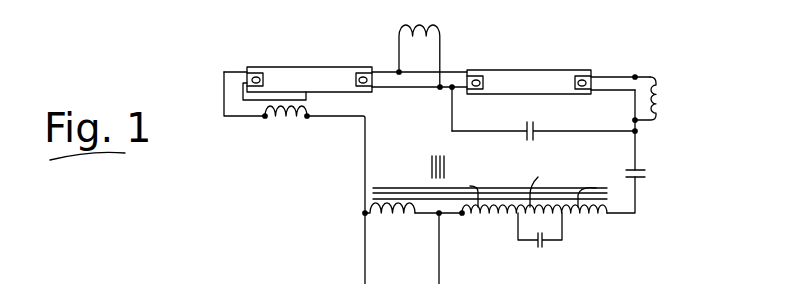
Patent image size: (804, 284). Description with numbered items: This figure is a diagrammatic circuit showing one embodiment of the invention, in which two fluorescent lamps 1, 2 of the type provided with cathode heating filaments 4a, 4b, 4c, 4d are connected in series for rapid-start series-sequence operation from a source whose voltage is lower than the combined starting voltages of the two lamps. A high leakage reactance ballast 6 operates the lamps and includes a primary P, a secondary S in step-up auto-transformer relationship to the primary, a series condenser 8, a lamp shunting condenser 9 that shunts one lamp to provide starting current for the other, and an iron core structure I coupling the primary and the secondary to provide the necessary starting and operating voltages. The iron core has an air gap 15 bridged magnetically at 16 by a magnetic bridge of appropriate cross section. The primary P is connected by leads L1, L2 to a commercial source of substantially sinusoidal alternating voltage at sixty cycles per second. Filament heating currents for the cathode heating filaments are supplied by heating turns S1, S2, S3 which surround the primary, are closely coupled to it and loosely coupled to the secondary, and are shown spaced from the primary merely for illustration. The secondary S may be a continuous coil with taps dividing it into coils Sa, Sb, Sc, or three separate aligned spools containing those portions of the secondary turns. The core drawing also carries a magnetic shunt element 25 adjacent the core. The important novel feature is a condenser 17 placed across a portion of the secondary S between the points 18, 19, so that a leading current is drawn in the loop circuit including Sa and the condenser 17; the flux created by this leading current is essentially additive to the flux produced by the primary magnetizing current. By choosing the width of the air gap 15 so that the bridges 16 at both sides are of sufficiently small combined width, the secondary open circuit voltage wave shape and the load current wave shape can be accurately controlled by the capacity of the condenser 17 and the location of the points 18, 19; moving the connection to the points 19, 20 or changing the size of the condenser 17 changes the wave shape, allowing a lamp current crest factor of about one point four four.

The fluorescent lamp 1 is at (305, 67).
The fluorescent lamp 2 is at (533, 70).
The cathode heating filament 4a is at (262, 75).
The cathode heating filament 4b is at (362, 75).
The cathode heating filament 4c is at (478, 77).
The cathode heating filament 4d is at (578, 77).
The high leakage reactance ballast 6 is at (359, 204).
The series condenser 8 is at (647, 171).
The lamp shunting condenser 9 is at (535, 140).
The air gap 15 is at (550, 205).
The magnetic bridge 16 is at (545, 205).
The condenser 17 is at (537, 250).
The tap point 18 is at (512, 223).
The tap point 19 is at (562, 218).
The tap point 20 is at (612, 215).
The magnetic shunt 25 is at (430, 165).
The heating turns S1 is at (268, 120).
The heating turns S2 is at (410, 25).
The heating turns S3 is at (662, 96).
The secondary S is at (512, 187).
The secondary coil portion Sa is at (467, 186).
The secondary coil portion Sb is at (539, 182).
The secondary coil portion Sc is at (595, 188).
The iron core structure I is at (388, 158).
The primary P is at (390, 191).
The lead L1 is at (366, 262).
The lead L2 is at (439, 268).